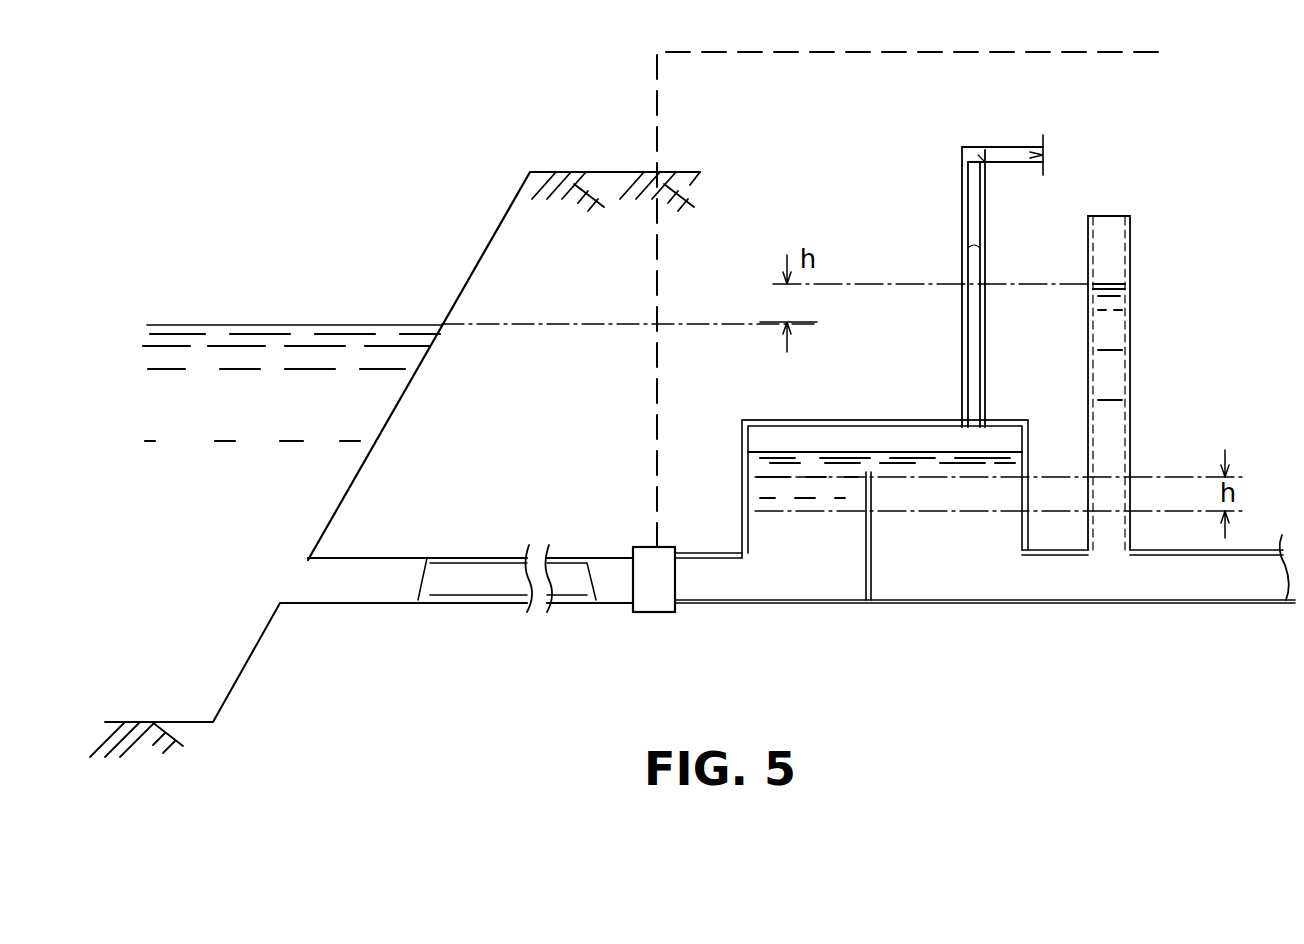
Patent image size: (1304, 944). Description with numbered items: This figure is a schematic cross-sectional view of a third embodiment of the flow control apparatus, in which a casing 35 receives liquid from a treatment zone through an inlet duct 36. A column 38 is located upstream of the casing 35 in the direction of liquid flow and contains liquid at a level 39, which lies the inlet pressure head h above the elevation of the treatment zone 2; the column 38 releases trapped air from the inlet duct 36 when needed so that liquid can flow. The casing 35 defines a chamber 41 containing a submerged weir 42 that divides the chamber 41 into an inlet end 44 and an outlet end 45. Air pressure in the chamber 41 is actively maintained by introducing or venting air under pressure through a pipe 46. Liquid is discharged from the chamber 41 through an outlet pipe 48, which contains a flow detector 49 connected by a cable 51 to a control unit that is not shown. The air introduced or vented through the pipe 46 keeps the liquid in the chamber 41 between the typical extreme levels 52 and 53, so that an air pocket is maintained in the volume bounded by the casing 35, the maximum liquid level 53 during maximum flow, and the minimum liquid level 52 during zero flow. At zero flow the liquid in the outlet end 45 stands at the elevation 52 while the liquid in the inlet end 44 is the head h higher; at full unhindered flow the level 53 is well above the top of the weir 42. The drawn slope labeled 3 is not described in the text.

The treatment zone 2 is at (237, 488).
The dam 3 is at (500, 222).
The casing 35 is at (743, 420).
The inlet duct 36 is at (1192, 600).
The column 38 is at (1130, 345).
The liquid level 39 is at (1102, 283).
The chamber 41 is at (812, 438).
The submerged weir 42 is at (870, 580).
The inlet end 44 is at (980, 533).
The outlet end 45 is at (788, 535).
The pipe 46 is at (965, 188).
The outlet pipe 48 is at (478, 615).
The flow detector 49 is at (648, 555).
The cable 51 is at (660, 140).
The minimum liquid level 52 is at (757, 507).
The maximum liquid level 53 is at (893, 432).